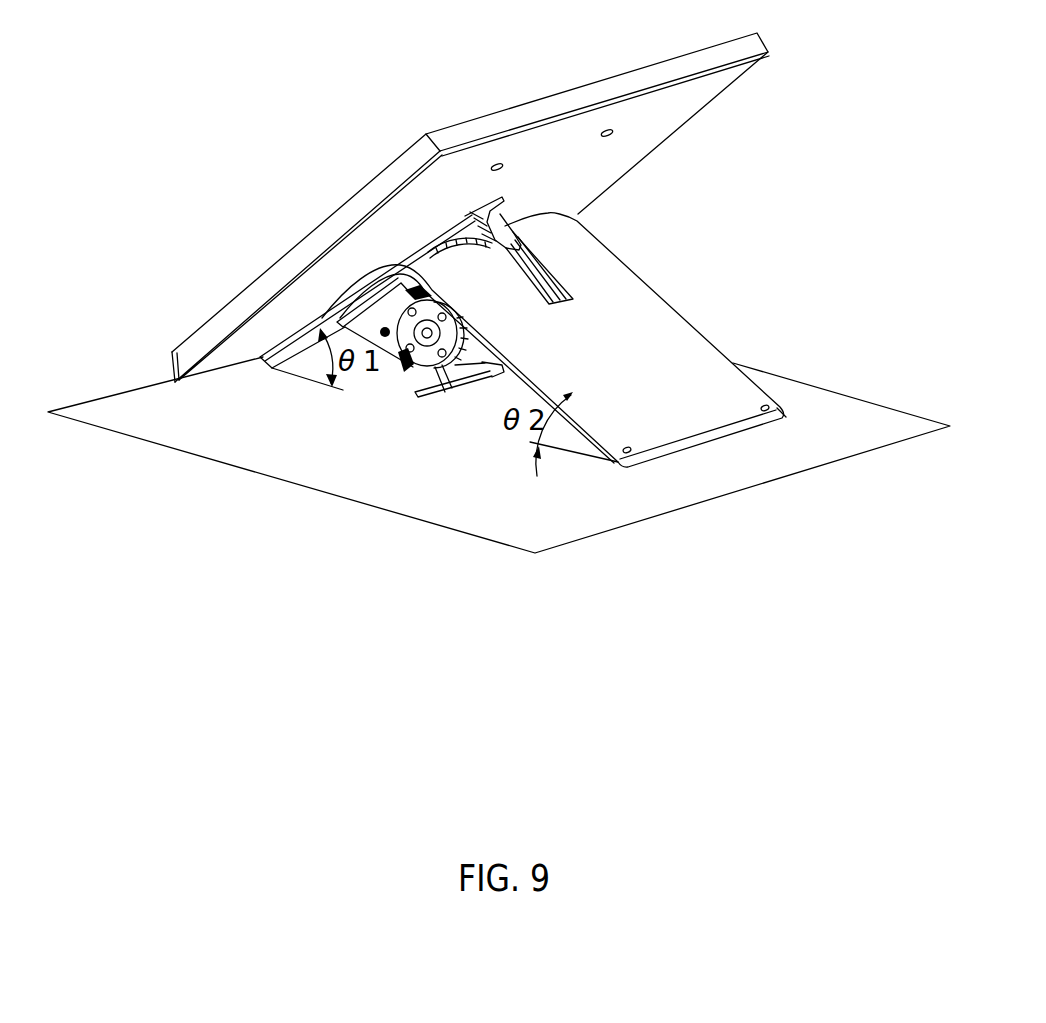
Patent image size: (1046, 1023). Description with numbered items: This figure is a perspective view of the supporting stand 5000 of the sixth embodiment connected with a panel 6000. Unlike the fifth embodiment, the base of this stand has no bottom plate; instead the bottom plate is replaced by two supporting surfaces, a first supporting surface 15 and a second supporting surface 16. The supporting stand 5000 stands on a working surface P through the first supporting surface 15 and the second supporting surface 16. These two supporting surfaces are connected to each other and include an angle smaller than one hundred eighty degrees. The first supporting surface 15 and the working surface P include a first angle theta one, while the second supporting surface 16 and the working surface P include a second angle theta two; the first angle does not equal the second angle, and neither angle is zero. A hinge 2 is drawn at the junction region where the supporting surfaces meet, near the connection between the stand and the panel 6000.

The display panel 6000 is at (538, 138).
The first supporting surface 15 is at (327, 312).
The second supporting surface 16 is at (647, 317).
The hinge 2 is at (408, 368).
The supporting stand 5000 is at (445, 396).
The working surface P is at (850, 412).